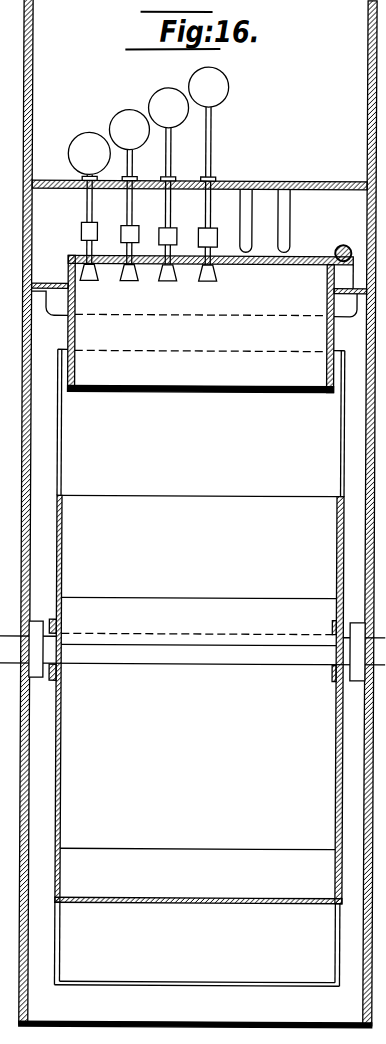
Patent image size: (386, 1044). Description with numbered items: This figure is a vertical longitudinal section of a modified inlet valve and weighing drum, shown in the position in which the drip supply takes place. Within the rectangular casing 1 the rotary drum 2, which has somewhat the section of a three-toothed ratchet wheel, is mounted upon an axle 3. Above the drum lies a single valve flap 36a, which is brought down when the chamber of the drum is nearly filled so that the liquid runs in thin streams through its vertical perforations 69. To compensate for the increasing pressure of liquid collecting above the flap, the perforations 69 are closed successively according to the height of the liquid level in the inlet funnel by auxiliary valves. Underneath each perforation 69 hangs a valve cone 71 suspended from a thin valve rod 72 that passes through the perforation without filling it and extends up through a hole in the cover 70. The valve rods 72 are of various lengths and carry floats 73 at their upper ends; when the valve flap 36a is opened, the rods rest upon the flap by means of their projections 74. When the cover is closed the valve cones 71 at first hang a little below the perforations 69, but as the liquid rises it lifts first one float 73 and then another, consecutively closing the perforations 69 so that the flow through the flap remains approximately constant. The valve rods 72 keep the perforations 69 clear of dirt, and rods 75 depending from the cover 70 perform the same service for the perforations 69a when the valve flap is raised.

The rectangular casing 1 is at (30, 87).
The rotary drum 2 is at (332, 464).
The axle 3 is at (148, 662).
The valve flap 36a is at (322, 266).
The perforations 69 is at (118, 253).
The perforations 69a is at (284, 262).
The cover 70 is at (305, 184).
The valve cone 71 is at (122, 282).
The valve rod 72 is at (204, 152).
The floats 73 is at (116, 127).
The projections 74 is at (120, 234).
The rods 75 is at (251, 210).